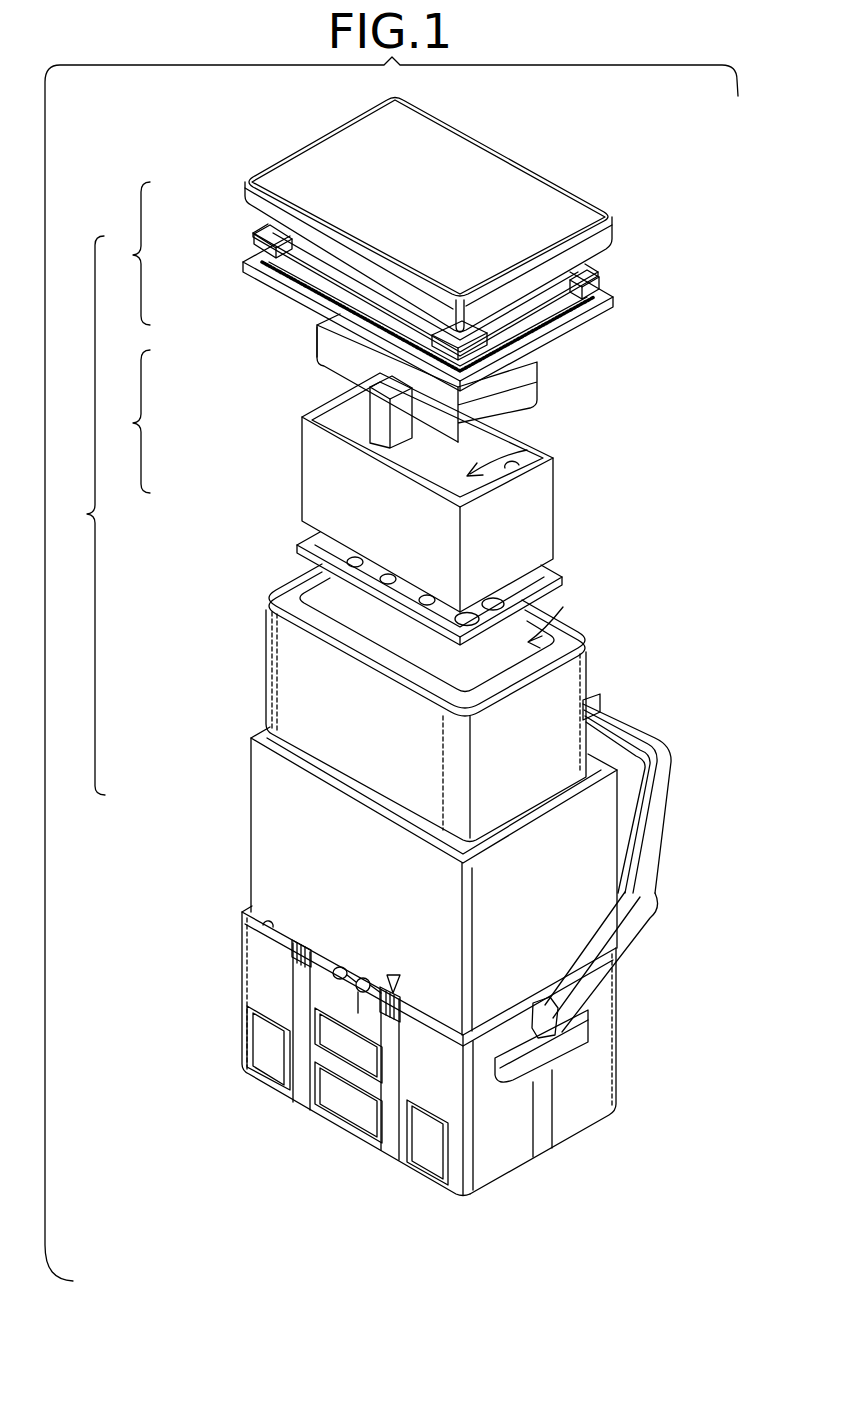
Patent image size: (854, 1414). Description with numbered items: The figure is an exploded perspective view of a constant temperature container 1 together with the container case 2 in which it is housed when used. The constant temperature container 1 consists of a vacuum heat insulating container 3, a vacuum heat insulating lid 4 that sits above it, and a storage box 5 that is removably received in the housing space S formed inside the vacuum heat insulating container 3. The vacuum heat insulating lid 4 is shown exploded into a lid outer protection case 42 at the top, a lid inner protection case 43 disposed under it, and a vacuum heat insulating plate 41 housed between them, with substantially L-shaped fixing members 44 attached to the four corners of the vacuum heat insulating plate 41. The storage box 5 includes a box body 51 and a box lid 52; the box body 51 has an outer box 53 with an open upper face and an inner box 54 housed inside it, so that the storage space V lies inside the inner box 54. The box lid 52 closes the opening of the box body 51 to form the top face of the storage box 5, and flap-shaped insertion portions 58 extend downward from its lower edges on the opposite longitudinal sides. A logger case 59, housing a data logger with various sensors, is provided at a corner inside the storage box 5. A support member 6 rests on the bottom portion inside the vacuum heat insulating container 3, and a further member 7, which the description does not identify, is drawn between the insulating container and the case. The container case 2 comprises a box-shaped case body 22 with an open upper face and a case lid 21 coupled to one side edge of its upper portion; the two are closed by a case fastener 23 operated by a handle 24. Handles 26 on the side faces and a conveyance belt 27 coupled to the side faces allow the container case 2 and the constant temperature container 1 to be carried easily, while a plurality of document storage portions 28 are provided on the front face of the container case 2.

The constant temperature container 1 is at (84, 515).
The container case 2 is at (650, 1043).
The vacuum heat insulating container 3 is at (290, 673).
The vacuum heat insulating lid 4 is at (129, 253).
The storage box 5 is at (130, 421).
The support member 6 is at (297, 547).
The heat insulating sleeve 7 is at (267, 790).
The case lid 21 is at (660, 800).
The case body 22 is at (490, 1127).
The case fastener 23 is at (266, 927).
The handle 24 is at (330, 968).
The handles 26 is at (563, 1052).
The conveyance belt 27 is at (618, 945).
The document storage portions 28 is at (267, 1055).
The vacuum heat insulating plate 41 is at (320, 258).
The lid outer protection case 42 is at (244, 196).
The lid inner protection case 43 is at (308, 299).
The fixing members 44 is at (252, 235).
The box body 51 is at (317, 482).
The box lid 52 is at (318, 334).
The outer box 53 is at (533, 530).
The inner box 54 is at (537, 467).
The insertion portions 58 is at (320, 357).
The logger case 59 is at (372, 430).
The housing space S is at (563, 607).
The storage space V is at (528, 446).